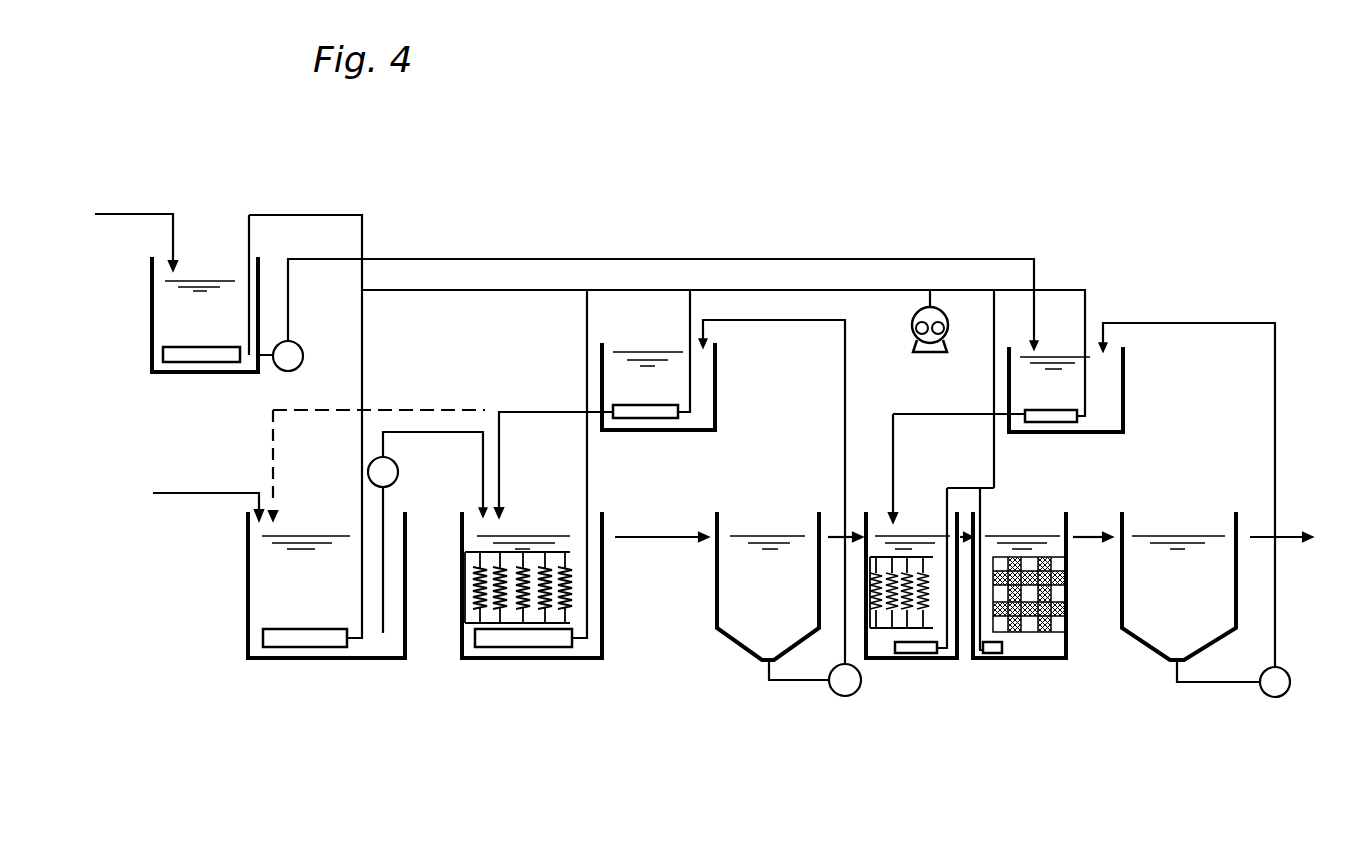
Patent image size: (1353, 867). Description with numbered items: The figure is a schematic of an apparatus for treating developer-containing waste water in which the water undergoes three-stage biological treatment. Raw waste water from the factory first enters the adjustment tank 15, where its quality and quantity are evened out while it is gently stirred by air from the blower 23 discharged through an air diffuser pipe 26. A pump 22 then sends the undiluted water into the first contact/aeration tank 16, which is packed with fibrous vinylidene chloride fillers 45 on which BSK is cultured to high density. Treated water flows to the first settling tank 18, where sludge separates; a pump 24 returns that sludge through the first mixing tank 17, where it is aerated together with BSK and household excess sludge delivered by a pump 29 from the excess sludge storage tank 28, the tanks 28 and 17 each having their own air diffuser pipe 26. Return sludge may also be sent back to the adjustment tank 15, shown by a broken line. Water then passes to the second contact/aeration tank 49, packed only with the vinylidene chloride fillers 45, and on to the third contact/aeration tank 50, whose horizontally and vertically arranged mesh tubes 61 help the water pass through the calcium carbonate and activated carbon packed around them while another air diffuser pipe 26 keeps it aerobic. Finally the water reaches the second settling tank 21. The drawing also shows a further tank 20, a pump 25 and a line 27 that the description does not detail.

The adjustment tank 15 is at (246, 577).
The first contact/aeration tank 16 is at (477, 660).
The first mixing tank 17 is at (718, 399).
The first settling tank 18 is at (738, 645).
The chemical tank 20 is at (1125, 398).
The second settling tank 21 is at (1143, 640).
The pump 22 is at (398, 470).
The blower 23 is at (912, 332).
The pump 24 is at (840, 697).
The pump 25 is at (1290, 685).
The air diffuser pipe 26 is at (203, 355).
The power supply line 27 is at (1063, 291).
The excess sludge storage tank 28 is at (151, 318).
The pump 29 is at (300, 347).
The fibrous vinylidene chloride fillers 45 is at (477, 588).
The second contact/aeration tank 49 is at (872, 660).
The third contact/aeration tank 50 is at (1038, 660).
The mesh tubes 61 is at (1067, 593).